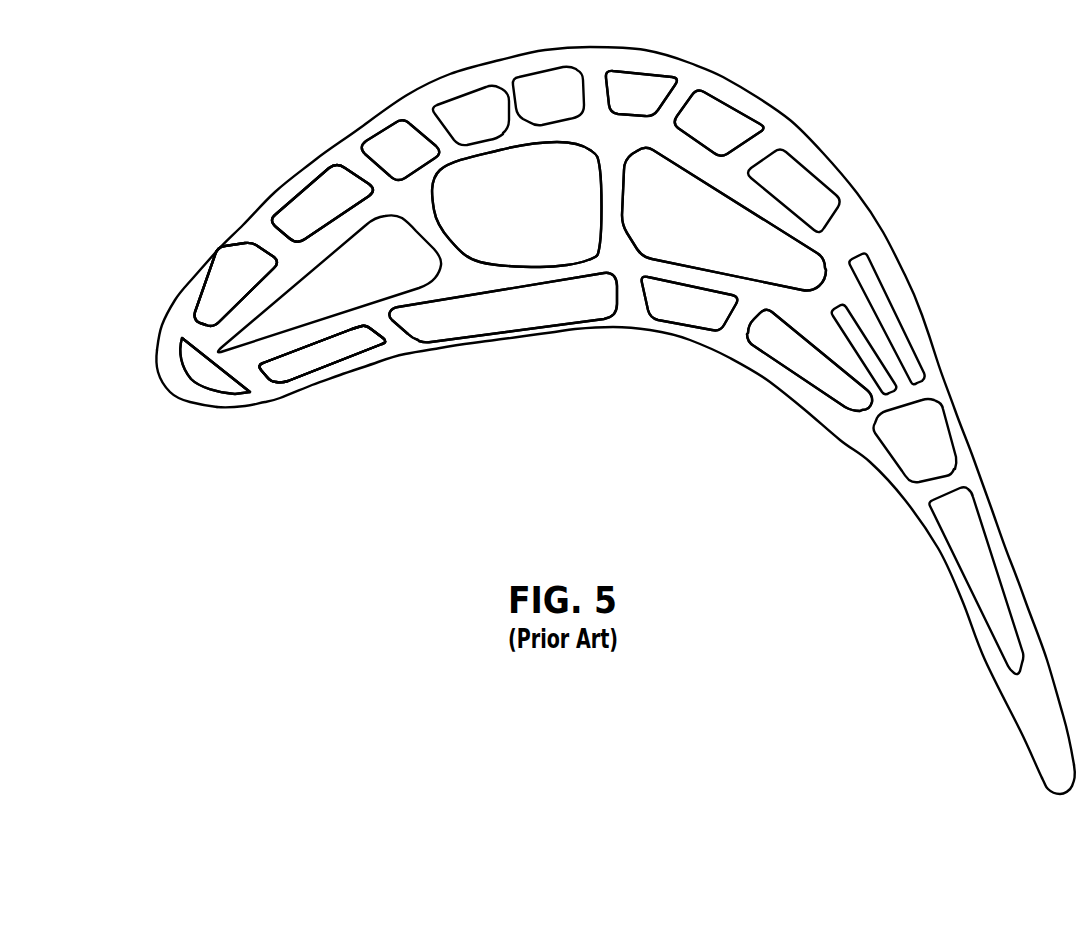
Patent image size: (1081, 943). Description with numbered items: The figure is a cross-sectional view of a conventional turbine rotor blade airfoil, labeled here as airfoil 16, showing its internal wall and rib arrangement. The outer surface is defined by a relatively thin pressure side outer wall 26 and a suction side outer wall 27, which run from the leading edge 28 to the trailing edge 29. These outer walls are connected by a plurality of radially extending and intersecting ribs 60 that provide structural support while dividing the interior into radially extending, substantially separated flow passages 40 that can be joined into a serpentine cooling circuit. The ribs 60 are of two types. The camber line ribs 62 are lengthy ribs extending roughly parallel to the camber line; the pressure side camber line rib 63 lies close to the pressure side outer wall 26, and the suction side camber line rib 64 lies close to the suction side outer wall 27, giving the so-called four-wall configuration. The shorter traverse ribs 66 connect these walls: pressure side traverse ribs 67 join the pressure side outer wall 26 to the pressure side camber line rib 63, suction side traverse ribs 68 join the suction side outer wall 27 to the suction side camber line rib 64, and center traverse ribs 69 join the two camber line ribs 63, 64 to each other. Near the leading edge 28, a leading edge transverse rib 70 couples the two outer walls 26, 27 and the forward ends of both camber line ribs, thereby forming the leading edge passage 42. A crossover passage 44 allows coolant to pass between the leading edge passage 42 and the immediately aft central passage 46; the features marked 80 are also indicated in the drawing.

The airfoil 16 is at (965, 198).
The pressure side outer wall 26 is at (793, 383).
The suction side outer wall 27 is at (417, 102).
The leading edge 28 is at (160, 380).
The trailing edge 29 is at (1053, 778).
The flow passages 40 is at (632, 87).
The leading edge passage 42 is at (218, 378).
The crossover passage 44 is at (207, 357).
The central passage 46 is at (403, 279).
The ribs 60 is at (367, 167).
The camber line rib 62 is at (541, 216).
The pressure side camber line rib 63 is at (418, 295).
The suction side camber line rib 64 is at (480, 148).
The traverse rib 66 is at (520, 250).
The pressure side traverse ribs 67 is at (370, 337).
The suction side traverse ribs 68 is at (273, 240).
The center traverse ribs 69 is at (468, 240).
The leading edge transverse rib 70 is at (263, 387).
The cooling holes 80 is at (243, 360).